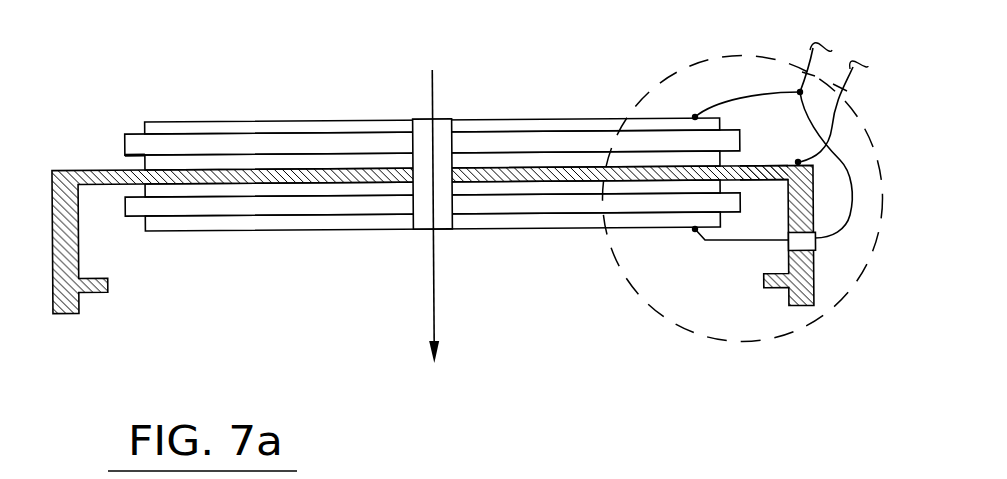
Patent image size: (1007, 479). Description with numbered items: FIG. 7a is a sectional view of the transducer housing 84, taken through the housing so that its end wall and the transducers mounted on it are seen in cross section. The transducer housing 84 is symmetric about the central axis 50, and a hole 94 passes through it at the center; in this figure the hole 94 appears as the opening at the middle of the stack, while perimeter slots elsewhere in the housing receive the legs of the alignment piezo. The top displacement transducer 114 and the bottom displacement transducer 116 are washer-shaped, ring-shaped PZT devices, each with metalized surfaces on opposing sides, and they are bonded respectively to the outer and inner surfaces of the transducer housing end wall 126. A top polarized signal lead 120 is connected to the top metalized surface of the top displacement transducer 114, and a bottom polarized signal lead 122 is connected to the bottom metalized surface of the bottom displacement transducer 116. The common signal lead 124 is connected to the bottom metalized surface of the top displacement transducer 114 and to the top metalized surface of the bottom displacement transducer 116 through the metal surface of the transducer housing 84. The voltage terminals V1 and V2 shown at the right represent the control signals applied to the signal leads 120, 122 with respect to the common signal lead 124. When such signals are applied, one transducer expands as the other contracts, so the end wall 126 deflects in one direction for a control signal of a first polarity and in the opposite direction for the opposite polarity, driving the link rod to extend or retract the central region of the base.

The transducer housing 84 is at (50, 213).
The transducer housing end wall 126 is at (263, 175).
The top displacement transducer 114 is at (532, 143).
The bottom displacement transducer 116 is at (338, 210).
The hole 94 is at (438, 130).
The central axis 50 is at (436, 232).
The top polarized signal lead 120 is at (756, 92).
The bottom polarized signal lead 122 is at (738, 243).
The common signal lead 124 is at (800, 162).
The first voltage terminal V1 is at (821, 54).
The second voltage terminal V2 is at (838, 111).